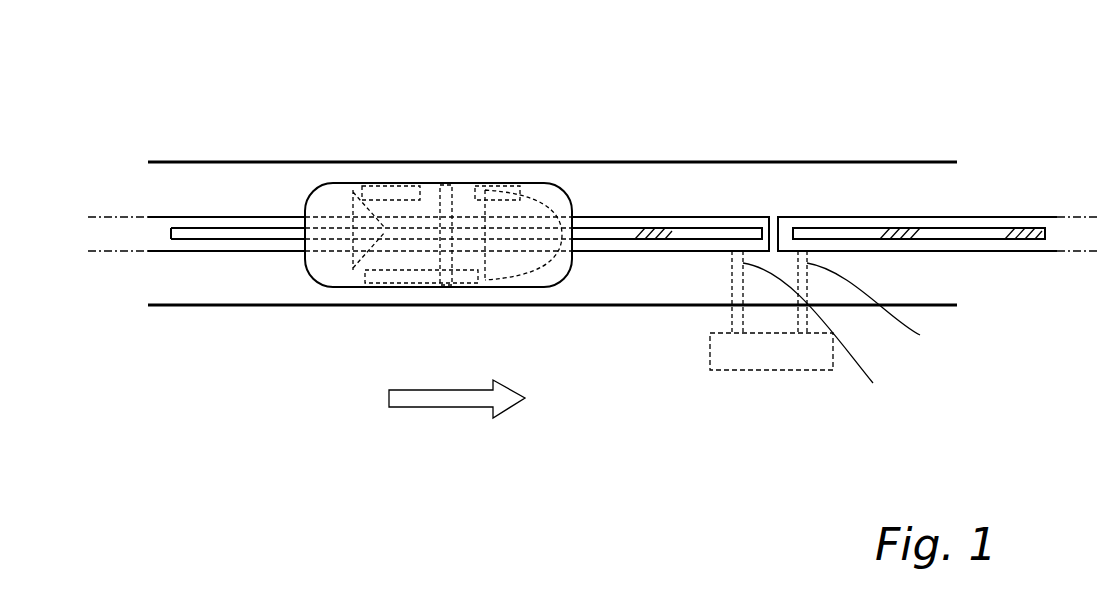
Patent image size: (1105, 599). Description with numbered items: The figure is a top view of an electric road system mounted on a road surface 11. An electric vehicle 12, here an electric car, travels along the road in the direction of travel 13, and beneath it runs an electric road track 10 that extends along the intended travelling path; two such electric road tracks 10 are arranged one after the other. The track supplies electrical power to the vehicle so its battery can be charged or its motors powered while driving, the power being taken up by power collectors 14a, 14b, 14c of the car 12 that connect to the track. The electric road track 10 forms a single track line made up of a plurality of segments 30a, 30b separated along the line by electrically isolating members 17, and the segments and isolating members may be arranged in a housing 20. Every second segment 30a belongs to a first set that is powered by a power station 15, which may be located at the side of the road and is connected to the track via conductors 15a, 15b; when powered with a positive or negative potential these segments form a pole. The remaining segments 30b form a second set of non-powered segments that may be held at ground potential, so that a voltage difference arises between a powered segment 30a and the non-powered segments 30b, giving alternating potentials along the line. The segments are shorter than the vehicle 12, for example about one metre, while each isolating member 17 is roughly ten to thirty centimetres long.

The electric road track 10 is at (757, 185).
The road surface 11 is at (176, 182).
The electric vehicle 12 is at (430, 287).
The direction of travel 13 is at (455, 408).
The power collector 14a is at (355, 198).
The power collector 14b is at (447, 185).
The power collector 14c is at (542, 206).
The power station 15 is at (798, 353).
The conductor 15a is at (732, 287).
The conductor 15b is at (863, 334).
The electrically isolating member 17 is at (282, 240).
The housing 20 is at (647, 251).
The segment of the first set 30a is at (213, 217).
The non-powered segment 30b is at (352, 232).